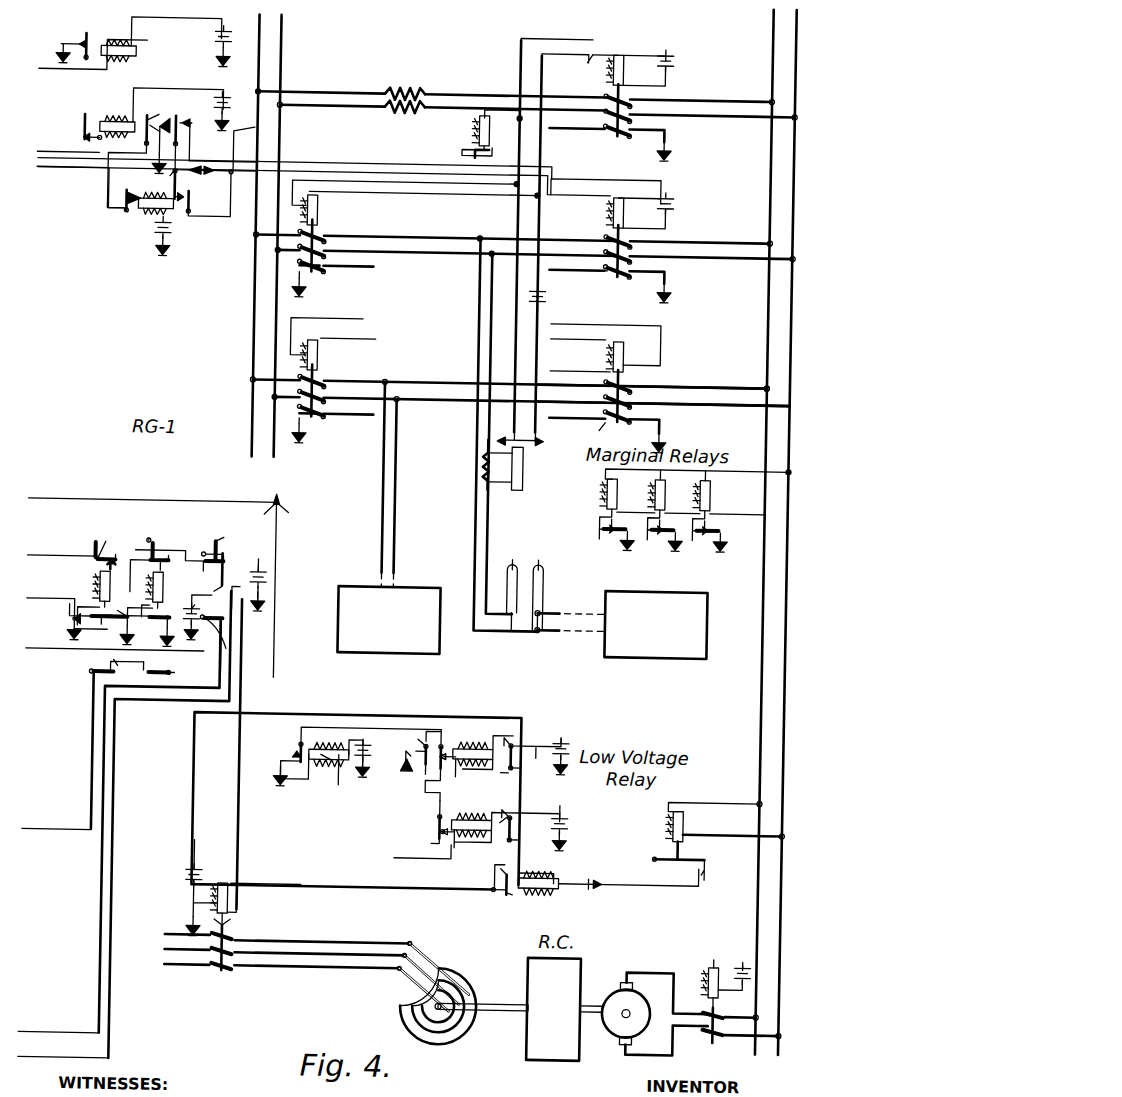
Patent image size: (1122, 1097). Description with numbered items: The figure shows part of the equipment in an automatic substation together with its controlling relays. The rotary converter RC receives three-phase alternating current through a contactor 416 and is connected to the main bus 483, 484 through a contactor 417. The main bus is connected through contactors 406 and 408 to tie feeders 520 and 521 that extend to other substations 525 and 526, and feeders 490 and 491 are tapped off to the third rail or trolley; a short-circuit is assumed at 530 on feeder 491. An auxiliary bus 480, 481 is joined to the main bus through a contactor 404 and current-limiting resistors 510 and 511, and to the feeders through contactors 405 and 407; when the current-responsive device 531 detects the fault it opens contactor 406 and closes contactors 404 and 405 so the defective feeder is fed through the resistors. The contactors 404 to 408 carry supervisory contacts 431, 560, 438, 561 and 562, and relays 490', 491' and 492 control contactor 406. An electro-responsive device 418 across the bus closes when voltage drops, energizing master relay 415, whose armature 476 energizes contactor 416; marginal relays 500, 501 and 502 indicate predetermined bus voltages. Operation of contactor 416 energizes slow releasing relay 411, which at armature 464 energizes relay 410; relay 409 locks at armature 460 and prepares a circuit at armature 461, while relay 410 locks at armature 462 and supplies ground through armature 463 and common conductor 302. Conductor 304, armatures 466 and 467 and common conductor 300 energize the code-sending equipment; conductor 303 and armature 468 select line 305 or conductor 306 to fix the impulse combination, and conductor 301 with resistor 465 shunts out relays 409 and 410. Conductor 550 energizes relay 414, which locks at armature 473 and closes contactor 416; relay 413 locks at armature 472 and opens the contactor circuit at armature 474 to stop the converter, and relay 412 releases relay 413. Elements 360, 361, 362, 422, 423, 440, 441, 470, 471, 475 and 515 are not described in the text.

The common conductor 300 is at (35, 498).
The conductor 301 is at (40, 545).
The common conductor 302 is at (50, 592).
The conductor 303 is at (45, 650).
The conductor 304 is at (38, 838).
The line 305 is at (50, 1041).
The conductor 306 is at (78, 1065).
The conductor 360 is at (45, 70).
The conductor 361 is at (48, 153).
The conductor 362 is at (58, 168).
The contactor 404 is at (622, 54).
The contactor 405 is at (318, 210).
The contactor 406 is at (612, 222).
The contactor 407 is at (322, 355).
The contactor 408 is at (624, 352).
The relay 409 is at (110, 590).
The relay 410 is at (163, 590).
The slow releasing relay 411 is at (234, 554).
The relay 412 is at (340, 775).
The relay 413 is at (468, 775).
The relay 414 is at (470, 818).
The master relay 415 is at (556, 872).
The contactor 416 is at (228, 888).
The contactor 417 is at (714, 968).
The electro-responsive device 418 is at (660, 790).
The contact 422 is at (190, 141).
The contact 423 is at (161, 107).
The contact 431 is at (610, 135).
The contact 438 is at (612, 274).
The conductor 440 is at (548, 38).
The conductor 441 is at (566, 68).
The armature 460 is at (95, 555).
The armature 461 is at (104, 626).
The armature 462 is at (152, 555).
The armature 463 is at (160, 630).
The armature 464 is at (215, 540).
The resistor 465 is at (262, 568).
The armature 466 is at (99, 664).
The armature 467 is at (166, 658).
The armature 468 is at (233, 640).
The contact 470 is at (295, 750).
The contact 471 is at (418, 722).
The armature 472 is at (448, 722).
The armature 473 is at (435, 822).
The armature 474 is at (515, 760).
The contact 475 is at (515, 832).
The armature 476 is at (512, 893).
The auxiliary bus 480 is at (272, 42).
The auxiliary bus 481 is at (250, 61).
The main bus 483 is at (764, 29).
The main bus 484 is at (787, 54).
The feeder 490 is at (509, 581).
The relay 490' is at (166, 44).
The feeder 491 is at (571, 596).
The relay 491' is at (161, 113).
The relay 492 is at (150, 216).
The marginal relay 500 is at (624, 472).
The marginal relay 501 is at (672, 472).
The marginal relay 502 is at (718, 472).
The current-limiting resistor 510 is at (406, 88).
The current-limiting resistor 511 is at (404, 110).
The contact stack 515 is at (240, 932).
The tie feeder 520 is at (478, 437).
The tie feeder 521 is at (384, 514).
The substation 525 is at (620, 655).
The substation 526 is at (435, 650).
The short-circuit 530 is at (538, 558).
The current-responsive device 531 is at (520, 470).
The conductor 550 is at (437, 857).
The contact 560 is at (318, 280).
The contact 561 is at (318, 418).
The contact 562 is at (582, 433).